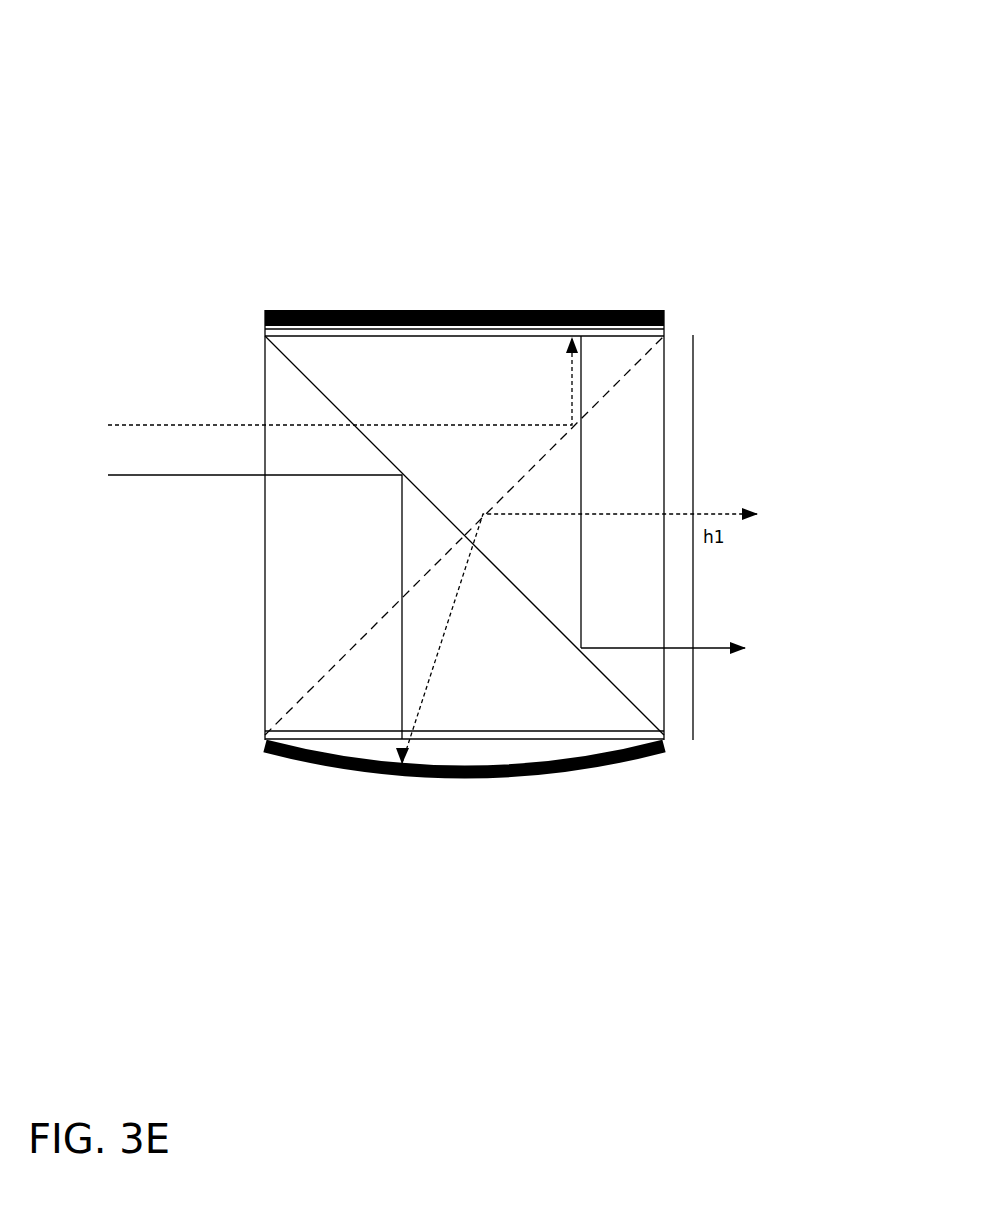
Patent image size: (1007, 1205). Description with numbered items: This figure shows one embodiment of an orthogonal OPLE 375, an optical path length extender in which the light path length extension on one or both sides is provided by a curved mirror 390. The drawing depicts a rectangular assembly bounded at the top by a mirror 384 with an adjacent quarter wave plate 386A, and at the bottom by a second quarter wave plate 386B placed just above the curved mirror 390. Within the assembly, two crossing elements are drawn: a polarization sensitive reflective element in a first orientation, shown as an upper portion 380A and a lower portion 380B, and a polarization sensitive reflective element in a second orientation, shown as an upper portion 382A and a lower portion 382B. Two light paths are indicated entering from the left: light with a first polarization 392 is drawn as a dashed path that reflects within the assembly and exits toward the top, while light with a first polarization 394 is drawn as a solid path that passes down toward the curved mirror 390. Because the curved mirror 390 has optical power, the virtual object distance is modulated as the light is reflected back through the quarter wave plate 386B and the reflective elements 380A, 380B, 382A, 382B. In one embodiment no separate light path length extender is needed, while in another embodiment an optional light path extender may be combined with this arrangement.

The orthogonal OPLE 375 is at (243, 148).
The mirror 384 is at (266, 310).
The quarter wave plate 386A is at (666, 333).
The quarter wave plate 386B is at (260, 731).
The polarization sensitive reflective element (first orientation) 380A is at (352, 410).
The polarization sensitive reflective element (first orientation) 380B is at (586, 665).
The polarization sensitive reflective element (second orientation) 382A is at (625, 366).
The polarization sensitive reflective element (second orientation) 382B is at (371, 648).
The curved mirror 390 is at (267, 746).
The light with a first polarization 392 is at (340, 376).
The light with a first polarization 394 is at (255, 607).